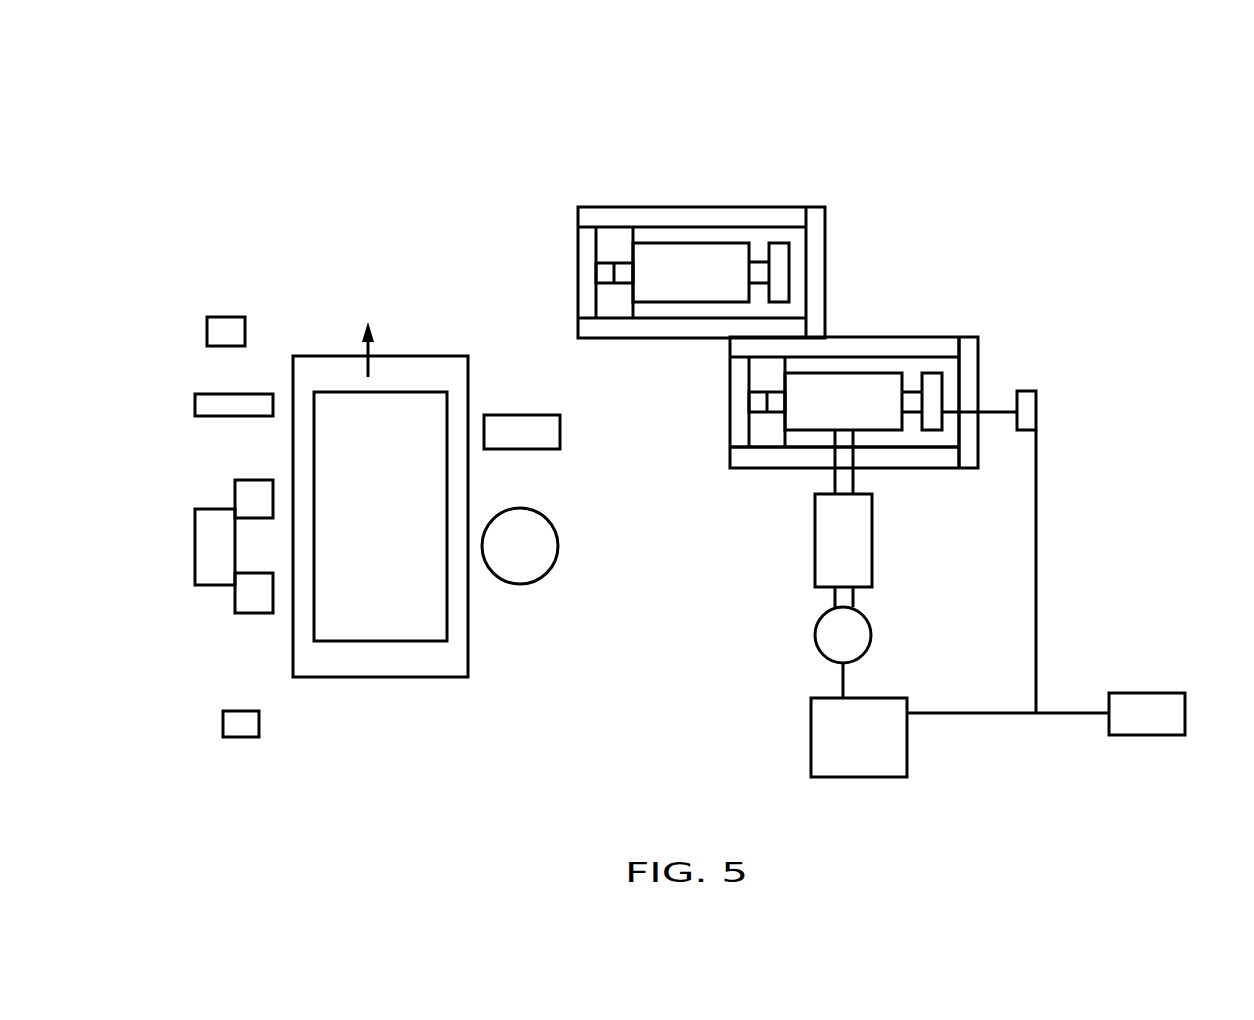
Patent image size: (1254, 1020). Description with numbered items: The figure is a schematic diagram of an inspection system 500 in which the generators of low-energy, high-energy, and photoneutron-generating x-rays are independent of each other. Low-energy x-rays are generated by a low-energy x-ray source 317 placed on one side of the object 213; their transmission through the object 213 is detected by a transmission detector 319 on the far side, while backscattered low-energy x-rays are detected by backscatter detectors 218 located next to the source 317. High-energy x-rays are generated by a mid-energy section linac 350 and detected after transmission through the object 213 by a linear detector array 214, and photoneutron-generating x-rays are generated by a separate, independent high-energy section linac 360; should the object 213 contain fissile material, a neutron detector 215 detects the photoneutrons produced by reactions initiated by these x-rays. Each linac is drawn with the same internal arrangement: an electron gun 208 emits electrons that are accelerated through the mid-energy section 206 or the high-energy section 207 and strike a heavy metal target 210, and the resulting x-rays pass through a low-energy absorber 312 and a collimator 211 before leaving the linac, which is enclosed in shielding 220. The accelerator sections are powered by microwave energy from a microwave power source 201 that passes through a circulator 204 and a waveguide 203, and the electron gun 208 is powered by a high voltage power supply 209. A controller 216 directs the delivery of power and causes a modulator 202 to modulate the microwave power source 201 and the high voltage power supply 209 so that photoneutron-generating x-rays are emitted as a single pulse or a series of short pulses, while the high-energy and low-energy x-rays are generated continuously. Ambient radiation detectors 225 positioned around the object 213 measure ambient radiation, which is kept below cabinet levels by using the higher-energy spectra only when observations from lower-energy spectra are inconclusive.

The inspection system 500 is at (1016, 169).
The high-energy section linac 360 is at (797, 190).
The mid-energy section linac 350 is at (930, 322).
The low-energy absorber 312 is at (585, 293).
The collimator 211 is at (620, 252).
The heavy metal target 210 is at (613, 272).
The high-energy section 207 is at (685, 243).
The mid-energy section 206 is at (840, 370).
The electron gun 208 is at (932, 372).
The shielding 220 is at (979, 453).
The high voltage power supply 209 is at (1038, 400).
The circulator 204 is at (814, 532).
The waveguide 203 is at (834, 598).
The microwave power source 201 is at (872, 630).
The modulator 202 is at (907, 765).
The controller 216 is at (1180, 693).
The object 213 is at (387, 641).
The ambient radiation detectors 225 is at (207, 328).
The linear detector array 214 is at (202, 393).
The low-energy x-ray source 317 is at (194, 553).
The backscatter detectors 218 is at (246, 613).
The neutron detector 215 is at (512, 414).
The transmission detector 319 is at (530, 585).